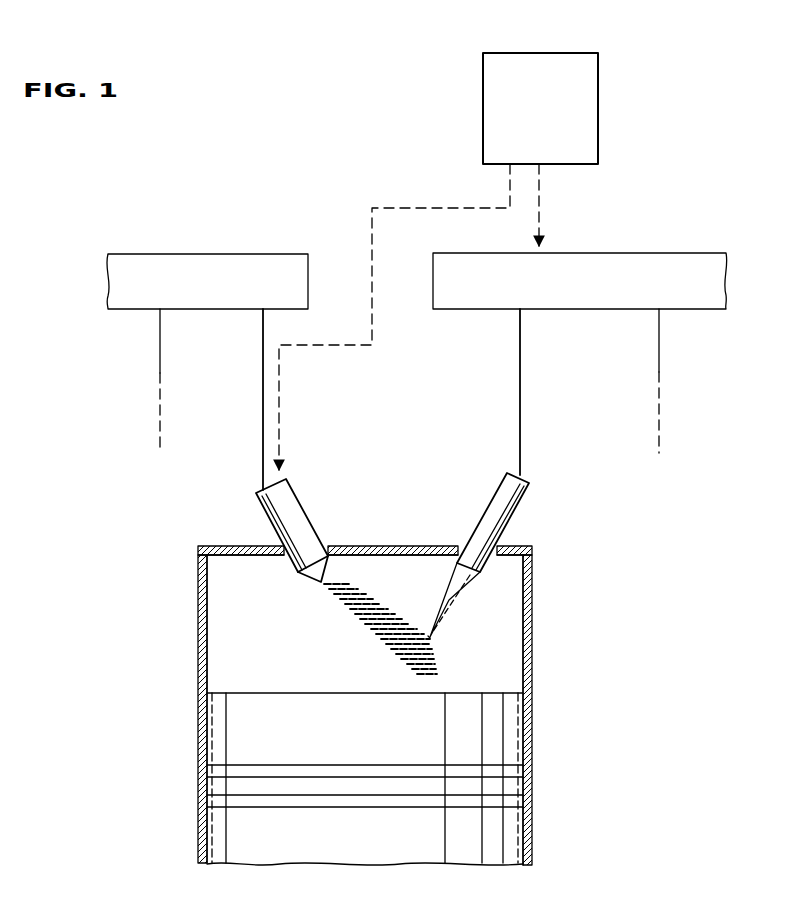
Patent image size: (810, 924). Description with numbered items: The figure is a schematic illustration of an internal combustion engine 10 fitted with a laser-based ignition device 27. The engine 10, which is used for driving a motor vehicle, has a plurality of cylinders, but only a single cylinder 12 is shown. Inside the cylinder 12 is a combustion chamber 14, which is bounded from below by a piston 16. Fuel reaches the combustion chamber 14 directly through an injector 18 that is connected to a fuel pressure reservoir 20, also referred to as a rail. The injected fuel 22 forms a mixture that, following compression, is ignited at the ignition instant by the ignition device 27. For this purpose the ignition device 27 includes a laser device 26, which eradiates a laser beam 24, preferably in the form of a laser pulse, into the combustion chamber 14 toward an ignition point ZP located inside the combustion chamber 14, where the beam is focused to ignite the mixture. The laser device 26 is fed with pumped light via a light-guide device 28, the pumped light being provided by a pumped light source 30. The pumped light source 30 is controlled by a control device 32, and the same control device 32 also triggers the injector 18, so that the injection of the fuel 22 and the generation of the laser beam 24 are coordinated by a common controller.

The internal combustion engine 10 is at (590, 758).
The cylinder 12 is at (532, 652).
The combustion chamber 14 is at (243, 625).
The piston 16 is at (243, 732).
The injector 18 is at (290, 515).
The fuel pressure reservoir 20 is at (208, 268).
The fuel 22 is at (370, 610).
The laser beam 24 is at (450, 600).
The laser device 26 is at (507, 517).
The ignition device 27 is at (645, 130).
The light-guide device 28 is at (520, 393).
The pumped light source 30 is at (683, 258).
The control device 32 is at (541, 68).
The ignition point ZP is at (435, 638).